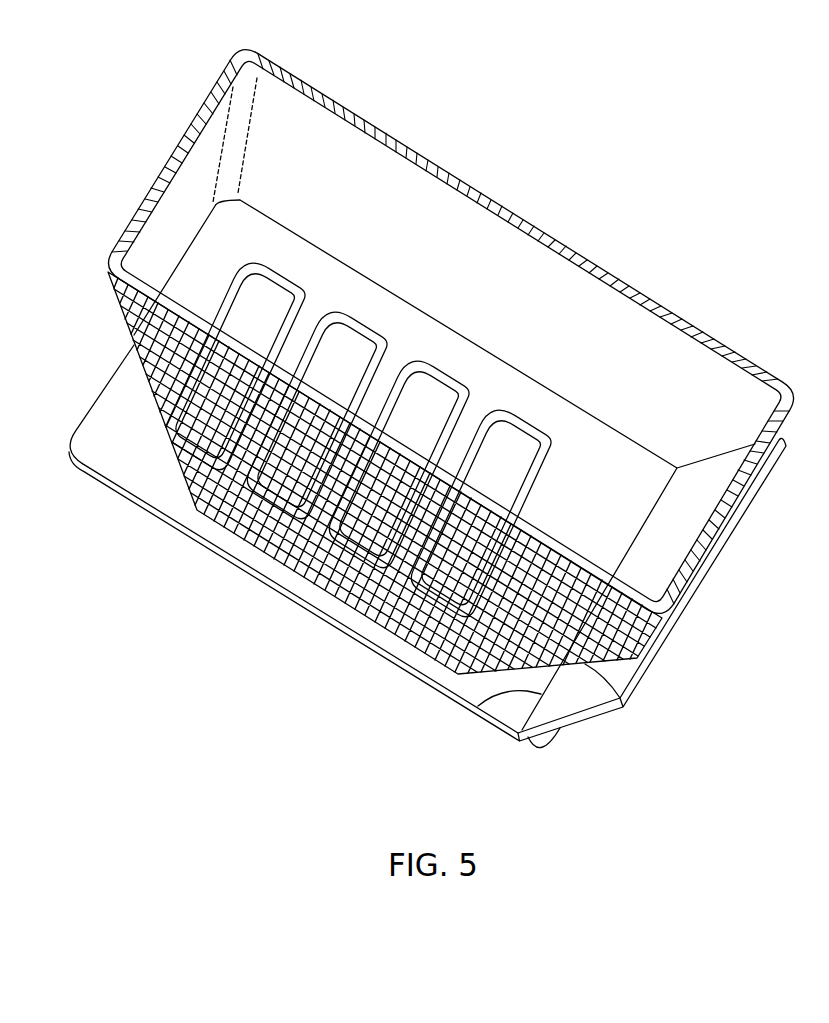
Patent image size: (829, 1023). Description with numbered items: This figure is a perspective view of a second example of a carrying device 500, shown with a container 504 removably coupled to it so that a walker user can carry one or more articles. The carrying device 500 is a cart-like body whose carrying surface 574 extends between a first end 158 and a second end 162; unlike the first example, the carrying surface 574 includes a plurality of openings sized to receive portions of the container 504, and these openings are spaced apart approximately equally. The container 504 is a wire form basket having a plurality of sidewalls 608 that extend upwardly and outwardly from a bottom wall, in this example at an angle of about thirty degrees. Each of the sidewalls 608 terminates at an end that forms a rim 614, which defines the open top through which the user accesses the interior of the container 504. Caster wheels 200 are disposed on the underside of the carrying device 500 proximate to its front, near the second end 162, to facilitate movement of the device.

The rim 614 is at (264, 62).
The container 504 is at (467, 131).
The sidewalls 608 is at (130, 327).
The first end 158 is at (102, 392).
The carrying surface 574 is at (133, 478).
The carrying device 500 is at (400, 692).
The second end 162 is at (478, 706).
The caster wheels 200 is at (551, 760).